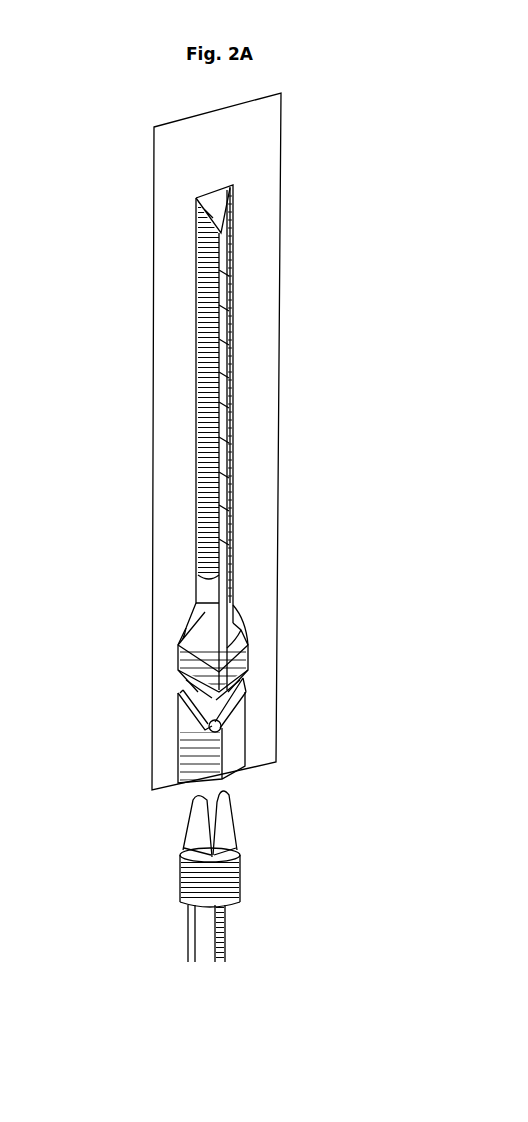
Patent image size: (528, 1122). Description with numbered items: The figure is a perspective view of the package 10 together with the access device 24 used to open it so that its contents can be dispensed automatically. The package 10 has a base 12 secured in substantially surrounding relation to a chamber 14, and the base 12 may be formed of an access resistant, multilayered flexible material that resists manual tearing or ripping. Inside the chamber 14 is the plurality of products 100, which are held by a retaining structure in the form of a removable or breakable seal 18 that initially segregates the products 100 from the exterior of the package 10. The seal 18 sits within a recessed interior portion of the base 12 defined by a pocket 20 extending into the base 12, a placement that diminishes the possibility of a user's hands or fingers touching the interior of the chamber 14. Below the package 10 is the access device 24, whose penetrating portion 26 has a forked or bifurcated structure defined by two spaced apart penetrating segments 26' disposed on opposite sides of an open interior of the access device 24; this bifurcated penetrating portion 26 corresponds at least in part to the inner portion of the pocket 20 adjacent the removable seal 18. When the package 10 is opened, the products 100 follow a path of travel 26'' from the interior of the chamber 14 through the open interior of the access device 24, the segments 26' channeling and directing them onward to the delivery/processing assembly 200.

The package 10 is at (323, 198).
The base 12 is at (278, 312).
The chamber 14 is at (233, 567).
The plurality of products 100 is at (210, 250).
The removable seal 18 is at (217, 693).
The pocket 20 is at (240, 740).
The penetrating portion 26 is at (266, 832).
The penetrating segments 26' is at (151, 826).
The path of travel 26'' is at (284, 817).
The access device 24 is at (285, 880).
The delivery/processing assembly 200 is at (275, 950).